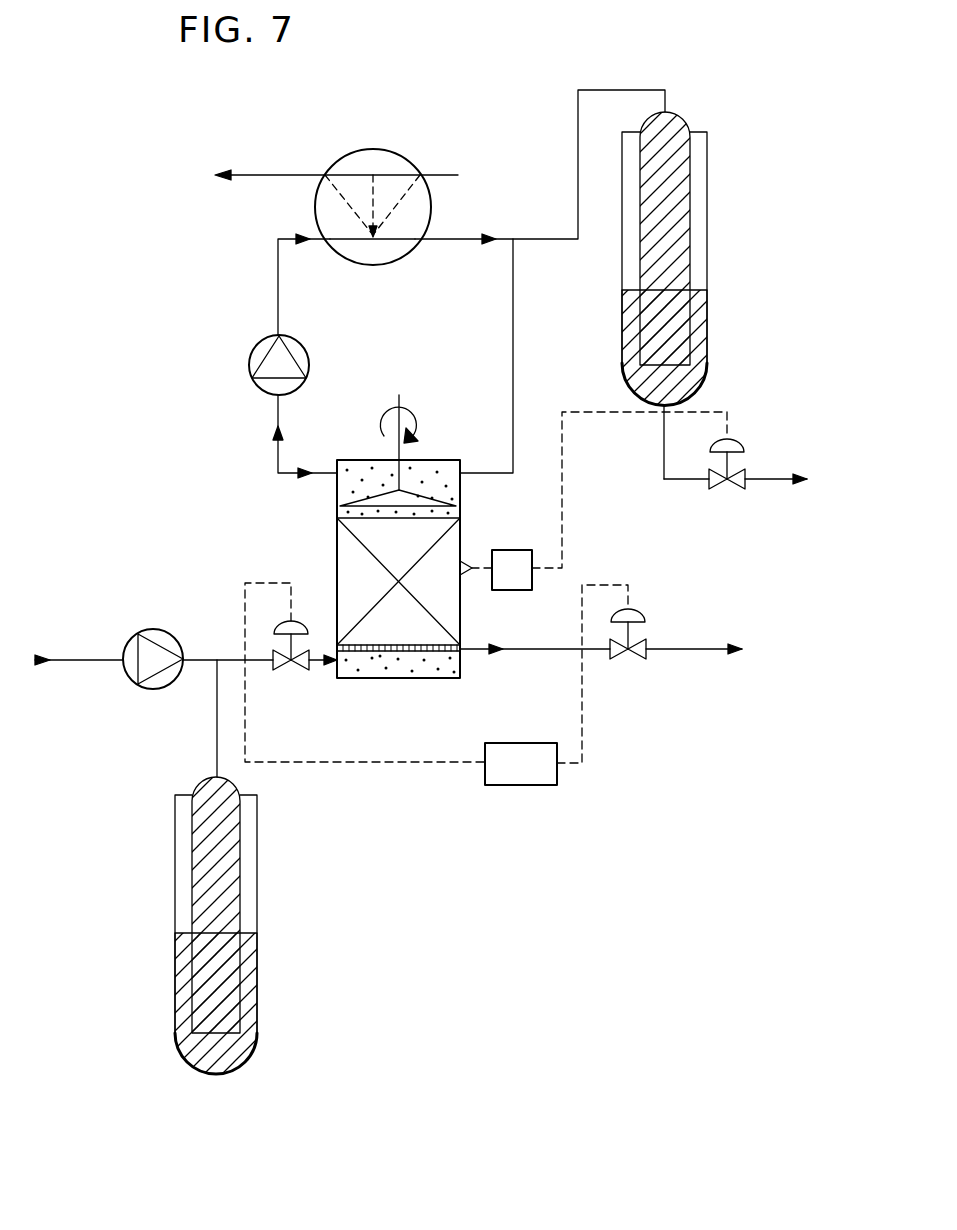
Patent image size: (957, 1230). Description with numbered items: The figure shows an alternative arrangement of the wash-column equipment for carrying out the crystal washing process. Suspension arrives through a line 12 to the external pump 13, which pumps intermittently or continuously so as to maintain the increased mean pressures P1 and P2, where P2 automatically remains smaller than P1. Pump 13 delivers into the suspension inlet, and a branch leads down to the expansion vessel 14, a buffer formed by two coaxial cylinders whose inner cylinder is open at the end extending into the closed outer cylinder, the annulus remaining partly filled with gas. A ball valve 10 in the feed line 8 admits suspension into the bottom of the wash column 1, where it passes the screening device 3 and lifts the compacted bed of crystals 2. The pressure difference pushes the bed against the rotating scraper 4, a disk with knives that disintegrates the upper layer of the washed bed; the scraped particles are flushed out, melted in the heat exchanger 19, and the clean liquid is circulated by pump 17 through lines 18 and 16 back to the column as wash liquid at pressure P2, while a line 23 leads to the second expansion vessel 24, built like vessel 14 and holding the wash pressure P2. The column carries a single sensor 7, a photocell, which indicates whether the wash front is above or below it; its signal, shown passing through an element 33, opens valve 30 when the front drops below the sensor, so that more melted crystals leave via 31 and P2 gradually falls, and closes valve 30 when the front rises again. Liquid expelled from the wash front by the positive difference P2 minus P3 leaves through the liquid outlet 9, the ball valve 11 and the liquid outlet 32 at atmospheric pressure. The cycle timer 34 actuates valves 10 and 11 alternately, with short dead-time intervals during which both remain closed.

The wash column 1 is at (337, 534).
The compacted bed of crystals 2 is at (348, 566).
The screening device 3 is at (428, 655).
The rotating scraper 4 is at (424, 503).
The sensor 7 is at (466, 578).
The feed line 8 is at (318, 668).
The liquid outlet 9 is at (537, 652).
The valve 10 is at (283, 672).
The valve 11 is at (633, 660).
The feed line 12 is at (78, 664).
The pump 13 is at (158, 685).
The expansion vessel 14 is at (172, 945).
The recycle inlet line 16 is at (275, 459).
The pump 17 is at (298, 357).
The recycle line 18 is at (278, 287).
The heat exchanger 19 is at (388, 153).
The line to vessel 23 is at (452, 243).
The expansion vessel 24 is at (708, 265).
The valve 30 is at (720, 490).
The melted crystal outlet 31 is at (768, 482).
The liquid outlet 32 is at (695, 652).
The controller 33 is at (512, 550).
The timer 34 is at (532, 780).
The pressure P1 is at (182, 856).
The pressure P2 is at (700, 177).
The pressure P3 is at (363, 655).